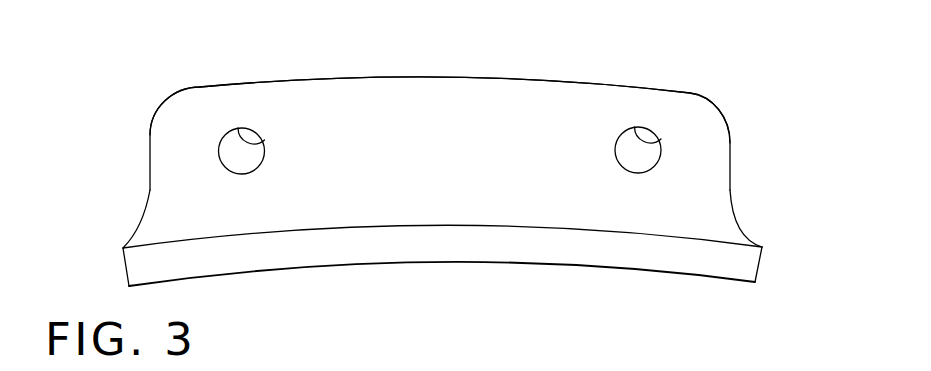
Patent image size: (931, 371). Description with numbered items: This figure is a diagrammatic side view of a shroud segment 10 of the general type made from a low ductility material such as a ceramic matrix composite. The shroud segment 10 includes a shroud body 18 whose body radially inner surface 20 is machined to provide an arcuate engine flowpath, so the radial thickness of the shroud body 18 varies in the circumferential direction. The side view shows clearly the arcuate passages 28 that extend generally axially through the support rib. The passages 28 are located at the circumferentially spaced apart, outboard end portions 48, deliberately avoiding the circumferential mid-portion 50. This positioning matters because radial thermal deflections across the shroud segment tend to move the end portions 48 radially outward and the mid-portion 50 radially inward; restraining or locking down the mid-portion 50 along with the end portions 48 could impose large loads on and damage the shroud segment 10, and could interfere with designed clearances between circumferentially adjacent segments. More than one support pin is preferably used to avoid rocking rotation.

The shroud segment 10 is at (740, 148).
The shroud body 18 is at (395, 249).
The body radially inner surface 20 is at (493, 265).
The passage 28 is at (266, 139).
The circumferential end portions 48 is at (210, 82).
The circumferential mid-portion 50 is at (440, 68).